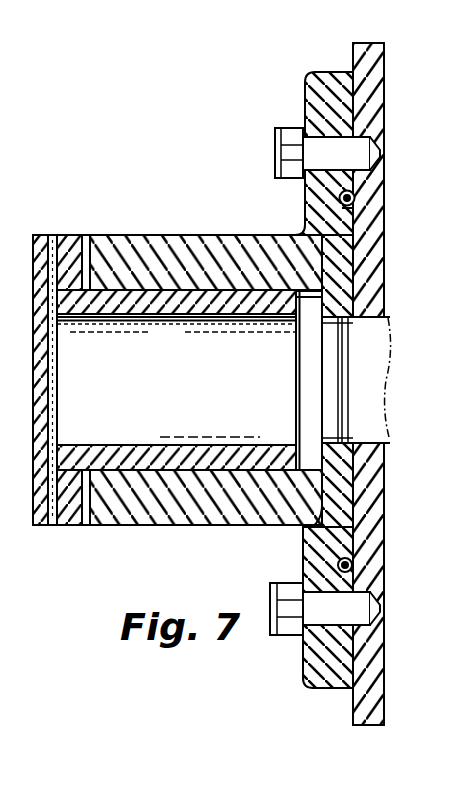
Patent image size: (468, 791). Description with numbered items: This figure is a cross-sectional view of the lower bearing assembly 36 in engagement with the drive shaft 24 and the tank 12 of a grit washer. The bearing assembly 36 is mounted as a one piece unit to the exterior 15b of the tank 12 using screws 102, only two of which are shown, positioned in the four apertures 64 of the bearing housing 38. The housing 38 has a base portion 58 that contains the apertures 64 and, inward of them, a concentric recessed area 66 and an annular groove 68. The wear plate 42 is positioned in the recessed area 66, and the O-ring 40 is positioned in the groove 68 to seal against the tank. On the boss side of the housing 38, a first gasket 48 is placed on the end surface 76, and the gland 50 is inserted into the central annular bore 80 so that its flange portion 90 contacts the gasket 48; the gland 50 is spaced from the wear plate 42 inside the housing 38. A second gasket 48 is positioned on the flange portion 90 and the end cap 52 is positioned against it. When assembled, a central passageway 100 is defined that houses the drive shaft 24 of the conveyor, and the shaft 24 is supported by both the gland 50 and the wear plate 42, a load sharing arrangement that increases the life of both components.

The tank 12 is at (368, 668).
The exterior 15b is at (352, 700).
The drive shaft 24 is at (377, 355).
The lower bearing assembly 36 is at (35, 527).
The bearing housing 38 is at (202, 243).
The O-ring 40 is at (355, 195).
The wear plate 42 is at (345, 515).
The gasket 48 is at (53, 240).
The gland 50 is at (207, 443).
The end cap 52 is at (43, 388).
The base portion 58 is at (426, 408).
The apertures 64 is at (335, 132).
The recessed area 66 is at (322, 505).
The annular groove 68 is at (356, 207).
The end surface 76 is at (88, 242).
The central annular bore 80 is at (187, 470).
The flange portion 90 is at (70, 478).
The central passageway 100 is at (224, 315).
The screws 102 is at (350, 150).